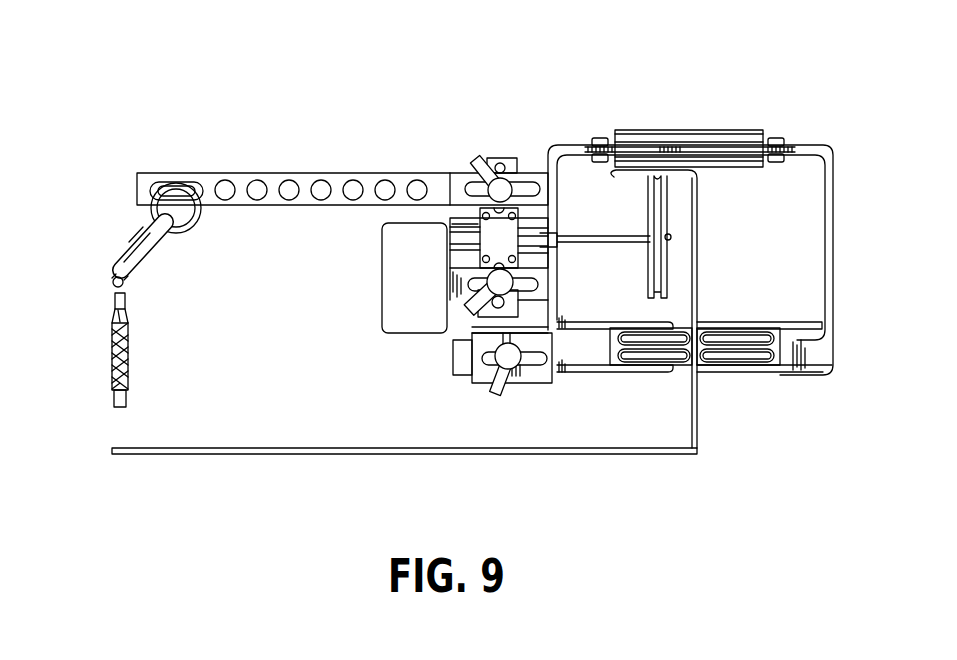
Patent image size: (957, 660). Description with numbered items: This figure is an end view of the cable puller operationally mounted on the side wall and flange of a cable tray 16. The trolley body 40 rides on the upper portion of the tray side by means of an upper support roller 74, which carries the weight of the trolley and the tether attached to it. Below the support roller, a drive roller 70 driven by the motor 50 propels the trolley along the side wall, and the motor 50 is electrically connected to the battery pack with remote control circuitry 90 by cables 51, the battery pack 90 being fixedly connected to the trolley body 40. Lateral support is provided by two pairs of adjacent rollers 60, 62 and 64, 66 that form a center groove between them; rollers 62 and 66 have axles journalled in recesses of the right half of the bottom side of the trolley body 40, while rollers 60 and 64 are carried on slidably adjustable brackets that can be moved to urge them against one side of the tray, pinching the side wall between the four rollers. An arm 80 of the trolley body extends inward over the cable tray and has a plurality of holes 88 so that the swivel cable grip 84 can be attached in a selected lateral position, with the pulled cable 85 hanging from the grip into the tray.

The base plate 16 is at (383, 454).
The trolley body 40 is at (460, 175).
The motor 50 is at (447, 247).
The cables 51 is at (445, 236).
The roller 60 is at (692, 312).
The roller 62 is at (706, 362).
The roller 64 is at (688, 335).
The roller 66 is at (760, 332).
The drive roller 70 is at (663, 205).
The upper support roller 74 is at (670, 130).
The arm 80 is at (342, 182).
The swivel cable grip 84 is at (143, 243).
The cable 85 is at (112, 352).
The holes 88 is at (262, 178).
The battery pack with remote control circuitry 90 is at (410, 320).